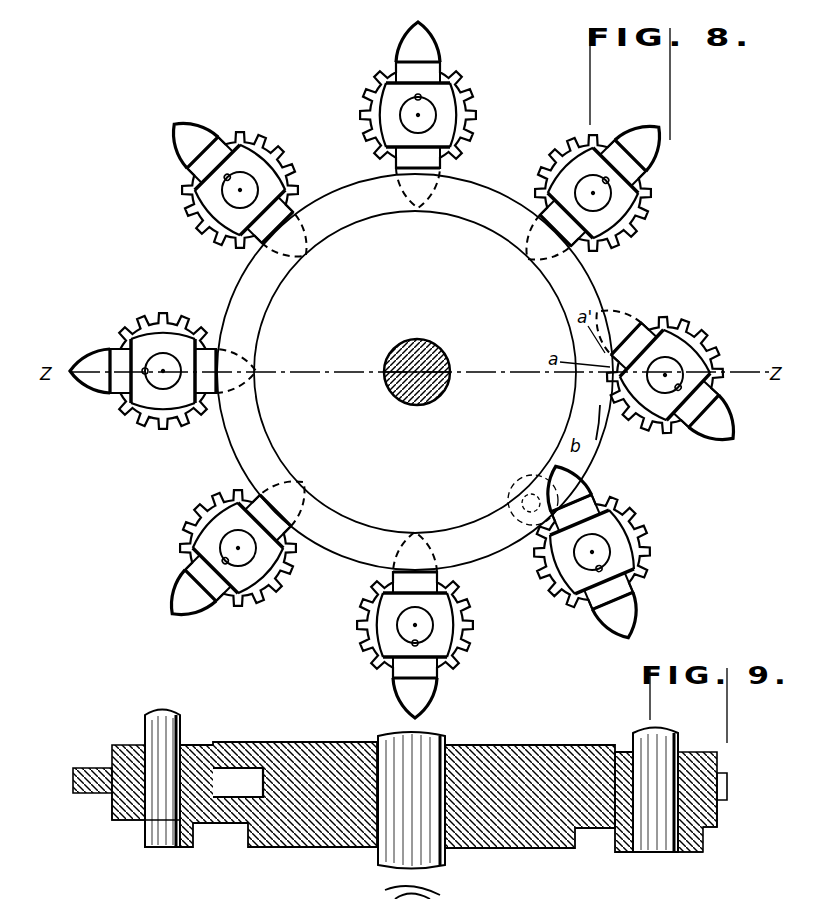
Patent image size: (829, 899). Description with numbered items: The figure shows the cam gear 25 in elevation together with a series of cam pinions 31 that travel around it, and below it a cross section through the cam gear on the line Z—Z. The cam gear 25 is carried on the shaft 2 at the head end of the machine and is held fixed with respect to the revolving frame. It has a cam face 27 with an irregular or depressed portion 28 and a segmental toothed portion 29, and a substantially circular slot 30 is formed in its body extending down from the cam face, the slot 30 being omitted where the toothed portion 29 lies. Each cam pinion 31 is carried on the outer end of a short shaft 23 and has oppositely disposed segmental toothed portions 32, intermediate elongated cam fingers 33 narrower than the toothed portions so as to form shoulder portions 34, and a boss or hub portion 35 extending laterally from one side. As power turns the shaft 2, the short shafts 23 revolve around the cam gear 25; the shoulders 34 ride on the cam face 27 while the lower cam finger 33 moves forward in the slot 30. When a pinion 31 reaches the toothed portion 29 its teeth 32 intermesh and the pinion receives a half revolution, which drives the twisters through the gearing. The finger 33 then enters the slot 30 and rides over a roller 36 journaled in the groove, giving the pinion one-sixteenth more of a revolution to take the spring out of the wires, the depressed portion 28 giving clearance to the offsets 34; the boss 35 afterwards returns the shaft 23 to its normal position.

In FIG. 8, the shaft 2 is at (383, 355).
In FIG. 9, the shaft 2 is at (388, 852).
In FIG. 8, the short shafts 23 is at (664, 370).
In FIG. 9, the short shafts 23 is at (157, 730).
In FIG. 8, the cam gear 25 is at (414, 392).
In FIG. 9, the cam gear 25 is at (392, 785).
In FIG. 8, the cam face 27 is at (346, 180).
In FIG. 8, the irregular portion 28 is at (503, 543).
In FIG. 8, the segmental toothed portion 29 is at (603, 415).
In FIG. 9, the segmental toothed portion 29 is at (617, 750).
In FIG. 9, the circular slot 30 is at (260, 770).
In FIG. 8, the cam pinions 31 is at (414, 370).
In FIG. 9, the cam pinions 31 is at (398, 787).
In FIG. 8, the segmental toothed portions 32 is at (650, 408).
In FIG. 8, the cam fingers 33 is at (607, 330).
In FIG. 9, the cam fingers 33 is at (73, 782).
In FIG. 8, the shoulder portions 34 is at (631, 318).
In FIG. 9, the shoulder portions 34 is at (112, 806).
In FIG. 8, the boss or hub portion 35 is at (713, 361).
In FIG. 9, the boss or hub portion 35 is at (137, 833).
In FIG. 8, the roller 36 is at (524, 492).